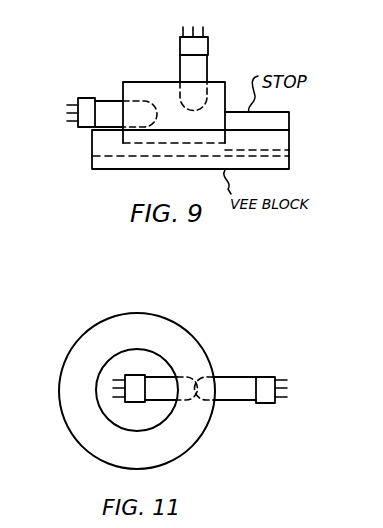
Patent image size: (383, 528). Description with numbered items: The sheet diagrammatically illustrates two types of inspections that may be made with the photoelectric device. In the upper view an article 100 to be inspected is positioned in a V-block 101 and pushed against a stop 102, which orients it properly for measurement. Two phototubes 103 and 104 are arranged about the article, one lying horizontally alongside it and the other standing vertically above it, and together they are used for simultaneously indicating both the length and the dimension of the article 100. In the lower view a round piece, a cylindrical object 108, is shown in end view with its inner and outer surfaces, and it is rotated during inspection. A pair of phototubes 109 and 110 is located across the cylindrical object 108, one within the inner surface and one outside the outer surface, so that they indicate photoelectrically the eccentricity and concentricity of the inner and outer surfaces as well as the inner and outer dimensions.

In FIG. 9, the article 100 is at (155, 88).
In FIG. 9, the V-block 101 is at (108, 162).
In FIG. 9, the stop 102 is at (283, 121).
In FIG. 9, the phototube 103 is at (108, 99).
In FIG. 9, the phototube 104 is at (204, 62).
In FIG. 11, the cylindrical object 108 is at (172, 322).
In FIG. 11, the phototube 109 is at (162, 385).
In FIG. 11, the phototube 110 is at (240, 385).